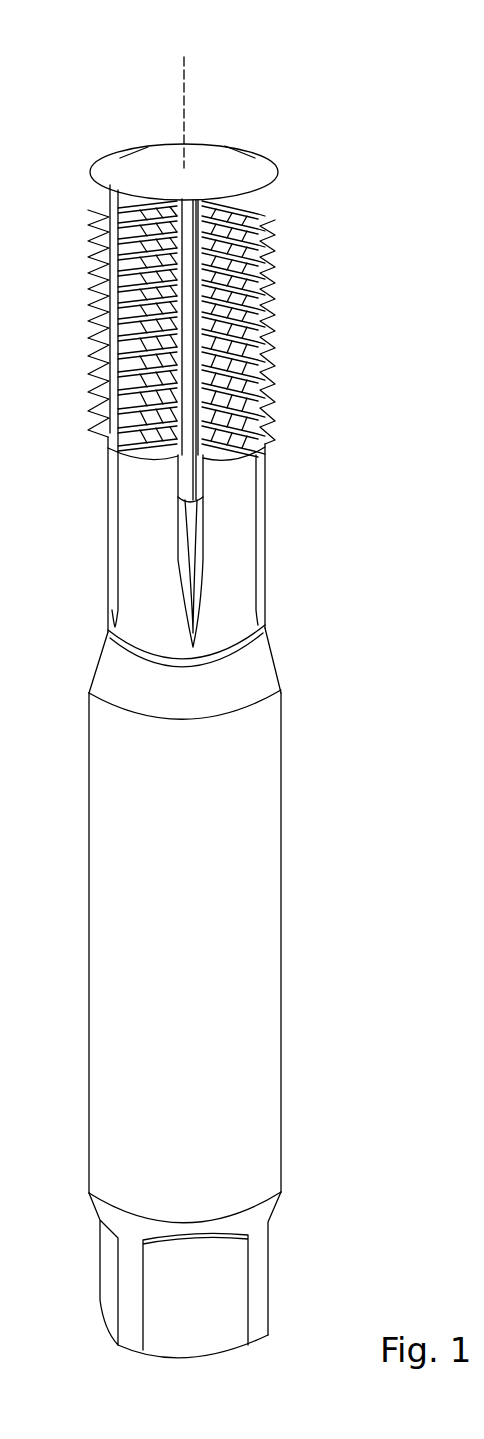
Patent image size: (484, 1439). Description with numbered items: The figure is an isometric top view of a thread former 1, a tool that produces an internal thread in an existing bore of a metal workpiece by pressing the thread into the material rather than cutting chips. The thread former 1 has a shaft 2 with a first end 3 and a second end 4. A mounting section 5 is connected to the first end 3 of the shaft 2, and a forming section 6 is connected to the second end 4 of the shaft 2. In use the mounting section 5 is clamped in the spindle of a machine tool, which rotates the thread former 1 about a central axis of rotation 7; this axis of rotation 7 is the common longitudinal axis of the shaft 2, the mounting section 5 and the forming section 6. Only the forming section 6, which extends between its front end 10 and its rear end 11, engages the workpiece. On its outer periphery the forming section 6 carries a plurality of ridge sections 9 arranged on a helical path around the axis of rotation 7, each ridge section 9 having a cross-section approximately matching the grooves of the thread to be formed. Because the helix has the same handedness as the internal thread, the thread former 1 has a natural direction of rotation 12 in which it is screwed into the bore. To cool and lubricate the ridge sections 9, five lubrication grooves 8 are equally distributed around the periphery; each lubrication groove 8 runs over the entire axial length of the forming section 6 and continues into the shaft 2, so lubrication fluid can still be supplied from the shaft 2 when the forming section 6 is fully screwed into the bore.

The thread former 1 is at (129, 138).
The shaft 2 is at (284, 452).
The first end 3 is at (219, 1220).
The second end 4 is at (222, 463).
The mounting section 5 is at (284, 1205).
The forming section 6 is at (285, 170).
The axis of rotation 7 is at (182, 133).
The lubrication grooves 8 is at (193, 508).
The ridge section 9 is at (226, 233).
The front end of the forming section 10 is at (288, 151).
The rear end of the forming section 11 is at (309, 441).
The direction of rotation 12 is at (233, 83).